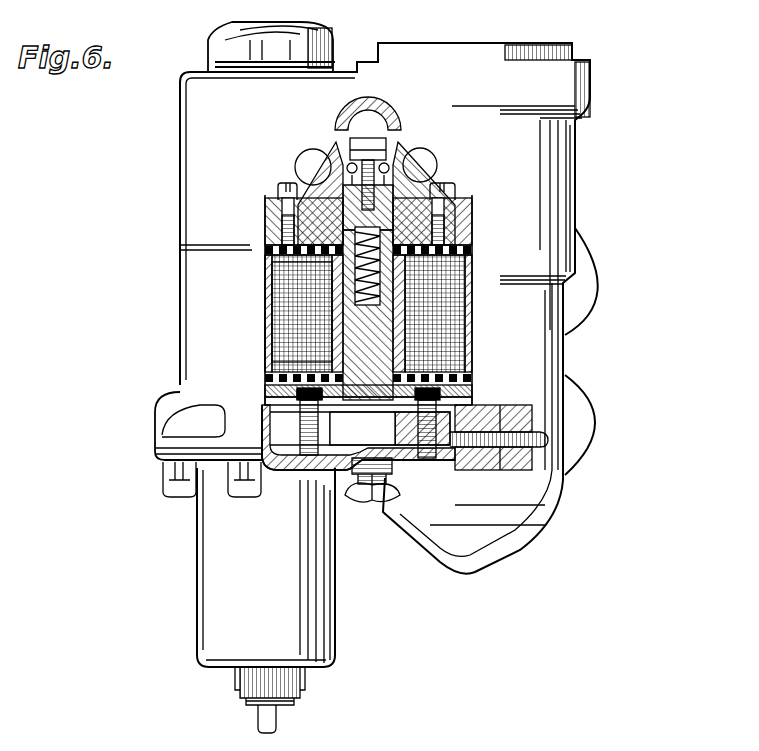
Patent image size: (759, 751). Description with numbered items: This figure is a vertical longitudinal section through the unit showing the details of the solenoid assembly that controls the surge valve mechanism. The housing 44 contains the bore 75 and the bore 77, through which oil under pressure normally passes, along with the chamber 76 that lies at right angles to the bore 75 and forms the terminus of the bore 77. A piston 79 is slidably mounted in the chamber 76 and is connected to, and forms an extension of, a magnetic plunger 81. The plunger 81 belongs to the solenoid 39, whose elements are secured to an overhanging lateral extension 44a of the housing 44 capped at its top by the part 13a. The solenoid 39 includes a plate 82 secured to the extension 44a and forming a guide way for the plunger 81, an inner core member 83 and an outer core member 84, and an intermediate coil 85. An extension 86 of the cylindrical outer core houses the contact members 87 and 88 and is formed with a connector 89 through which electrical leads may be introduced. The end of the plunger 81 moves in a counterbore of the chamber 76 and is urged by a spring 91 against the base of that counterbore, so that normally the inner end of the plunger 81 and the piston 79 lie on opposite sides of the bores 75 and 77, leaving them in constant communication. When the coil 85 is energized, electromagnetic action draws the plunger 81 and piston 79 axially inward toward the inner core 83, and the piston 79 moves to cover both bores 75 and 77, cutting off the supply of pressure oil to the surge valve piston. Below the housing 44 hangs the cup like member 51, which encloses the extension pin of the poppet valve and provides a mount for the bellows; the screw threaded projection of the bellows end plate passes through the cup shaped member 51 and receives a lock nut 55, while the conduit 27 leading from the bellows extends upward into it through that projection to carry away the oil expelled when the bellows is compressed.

The cap 13a is at (210, 40).
The housing 44 is at (193, 128).
The overhanging lateral extension 44a is at (368, 112).
The bore 77 is at (350, 165).
The chamber 76 is at (372, 138).
The piston 79 is at (386, 148).
The bore 75 is at (390, 163).
The magnetic plunger 81 is at (390, 215).
The plate 82 is at (445, 185).
The spring 91 is at (320, 283).
The solenoid 39 is at (256, 303).
The inner core member 83 is at (310, 320).
The outer core member 84 is at (262, 348).
The coil 85 is at (450, 317).
The extension 86 is at (290, 468).
The contact member 87 is at (312, 470).
The contact member 88 is at (428, 460).
The connector 89 is at (510, 468).
The cup like member 51 is at (238, 546).
The lock nut 55 is at (238, 675).
The conduit 27 is at (256, 716).